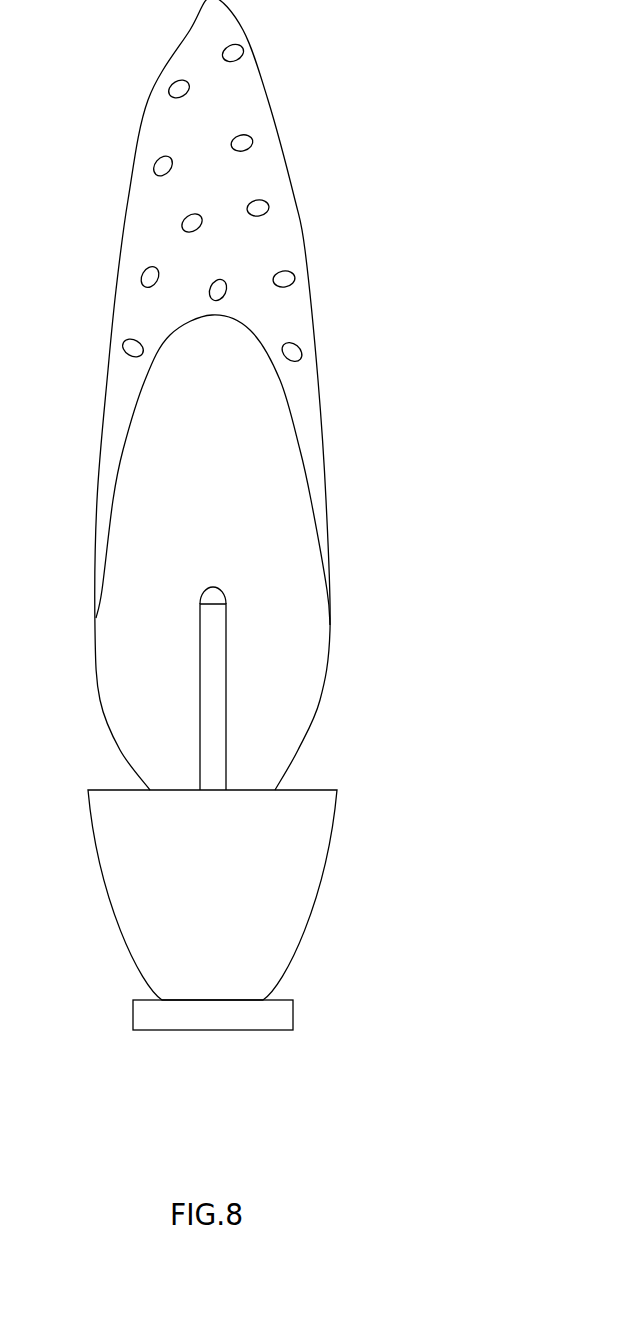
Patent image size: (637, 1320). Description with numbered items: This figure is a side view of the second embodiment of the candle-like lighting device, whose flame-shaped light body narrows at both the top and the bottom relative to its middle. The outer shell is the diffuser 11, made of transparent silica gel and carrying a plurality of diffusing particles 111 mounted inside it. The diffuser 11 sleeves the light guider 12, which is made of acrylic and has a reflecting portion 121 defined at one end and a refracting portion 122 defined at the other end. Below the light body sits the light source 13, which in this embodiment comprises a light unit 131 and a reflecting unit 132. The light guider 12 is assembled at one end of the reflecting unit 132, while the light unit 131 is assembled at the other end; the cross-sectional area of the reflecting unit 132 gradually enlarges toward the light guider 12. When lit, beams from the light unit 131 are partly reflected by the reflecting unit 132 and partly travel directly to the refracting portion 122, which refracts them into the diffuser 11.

The diffuser 11 is at (300, 235).
The diffusing particles 111 is at (253, 142).
The light guider 12 is at (277, 526).
The reflecting portion 121 is at (323, 692).
The refracting portion 122 is at (253, 335).
The light source 13 is at (290, 928).
The light unit 131 is at (293, 1017).
The reflecting unit 132 is at (307, 928).